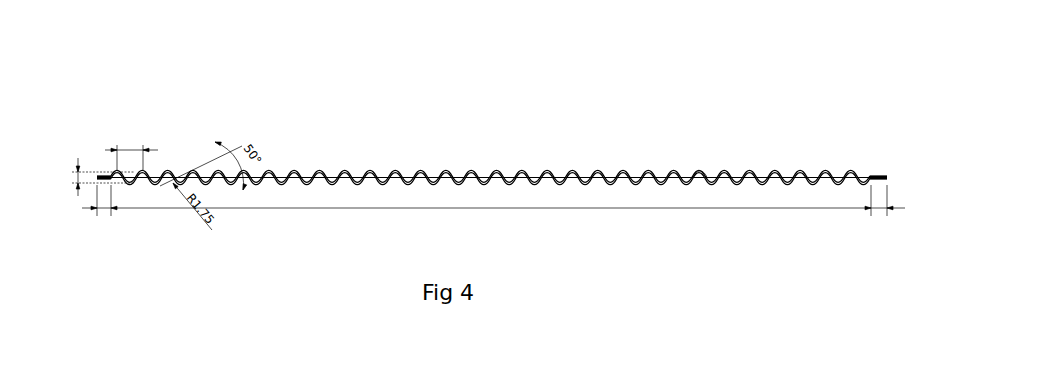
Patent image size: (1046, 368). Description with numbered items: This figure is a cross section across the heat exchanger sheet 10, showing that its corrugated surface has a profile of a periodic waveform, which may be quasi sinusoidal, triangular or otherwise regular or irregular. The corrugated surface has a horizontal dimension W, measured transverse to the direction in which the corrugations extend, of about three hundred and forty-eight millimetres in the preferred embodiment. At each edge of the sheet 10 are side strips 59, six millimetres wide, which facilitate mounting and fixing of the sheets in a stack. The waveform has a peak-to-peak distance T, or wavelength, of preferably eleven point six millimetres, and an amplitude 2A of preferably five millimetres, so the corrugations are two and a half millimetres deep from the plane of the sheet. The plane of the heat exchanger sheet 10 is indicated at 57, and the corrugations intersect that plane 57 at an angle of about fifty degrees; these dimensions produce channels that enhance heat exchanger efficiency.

The heat exchanger sheet 10 is at (582, 130).
The side strips 59 is at (103, 172).
The plane of the heat exchanger sheet 57 is at (700, 178).
The peak-to-peak distance T is at (160, 150).
The horizontal dimension W is at (338, 210).
The amplitude 2A is at (76, 193).